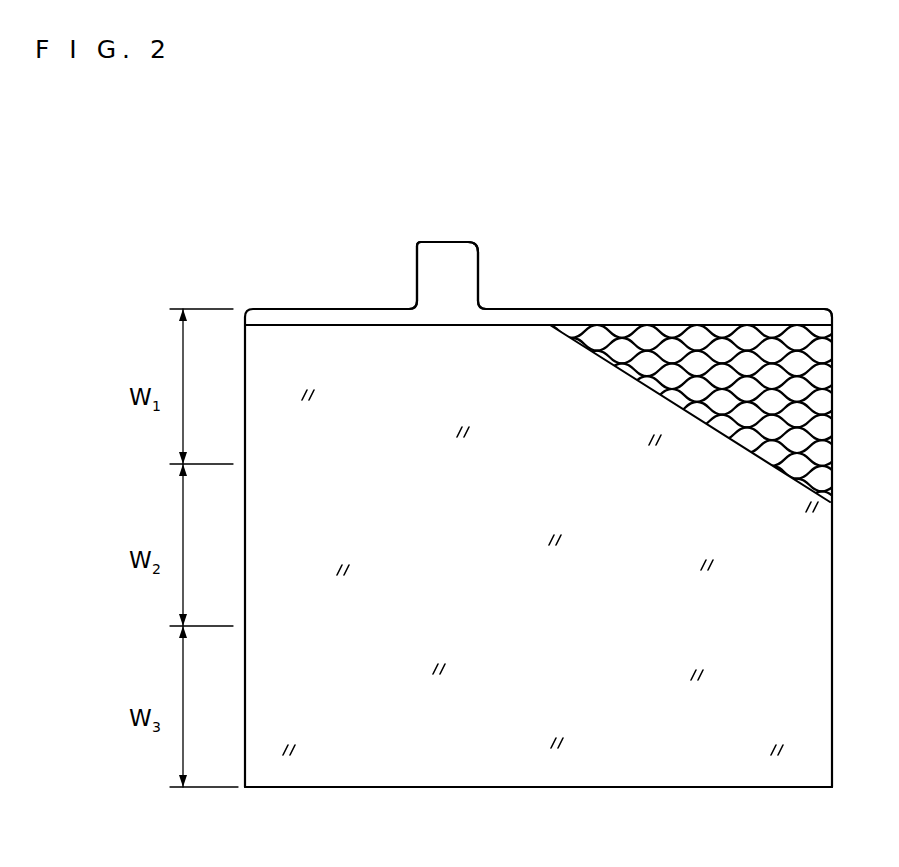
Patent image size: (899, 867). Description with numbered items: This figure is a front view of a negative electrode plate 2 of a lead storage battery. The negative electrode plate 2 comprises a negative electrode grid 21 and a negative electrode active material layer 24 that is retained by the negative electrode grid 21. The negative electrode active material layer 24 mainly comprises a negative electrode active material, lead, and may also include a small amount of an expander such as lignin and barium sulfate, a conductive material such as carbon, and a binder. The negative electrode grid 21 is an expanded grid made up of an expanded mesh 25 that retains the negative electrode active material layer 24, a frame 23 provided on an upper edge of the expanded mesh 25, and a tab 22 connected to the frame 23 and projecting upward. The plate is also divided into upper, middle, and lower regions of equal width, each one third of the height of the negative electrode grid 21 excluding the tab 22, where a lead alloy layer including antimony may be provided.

The negative electrode plate 2 is at (649, 300).
The negative electrode grid 21 is at (755, 318).
The tab 22 is at (446, 259).
The frame 23 is at (553, 316).
The negative electrode active material layer 24 is at (641, 763).
The expanded mesh 25 is at (597, 330).